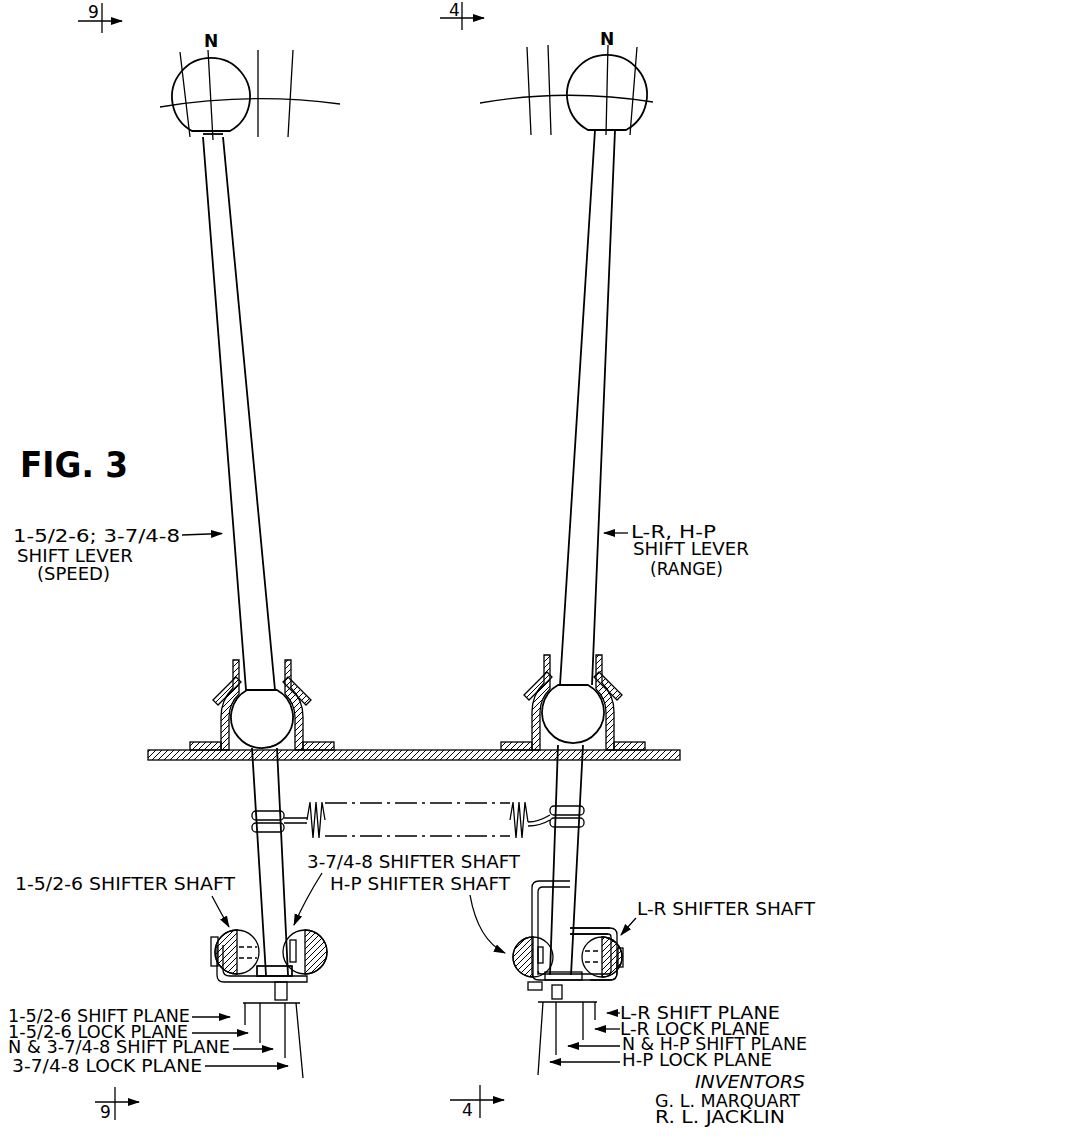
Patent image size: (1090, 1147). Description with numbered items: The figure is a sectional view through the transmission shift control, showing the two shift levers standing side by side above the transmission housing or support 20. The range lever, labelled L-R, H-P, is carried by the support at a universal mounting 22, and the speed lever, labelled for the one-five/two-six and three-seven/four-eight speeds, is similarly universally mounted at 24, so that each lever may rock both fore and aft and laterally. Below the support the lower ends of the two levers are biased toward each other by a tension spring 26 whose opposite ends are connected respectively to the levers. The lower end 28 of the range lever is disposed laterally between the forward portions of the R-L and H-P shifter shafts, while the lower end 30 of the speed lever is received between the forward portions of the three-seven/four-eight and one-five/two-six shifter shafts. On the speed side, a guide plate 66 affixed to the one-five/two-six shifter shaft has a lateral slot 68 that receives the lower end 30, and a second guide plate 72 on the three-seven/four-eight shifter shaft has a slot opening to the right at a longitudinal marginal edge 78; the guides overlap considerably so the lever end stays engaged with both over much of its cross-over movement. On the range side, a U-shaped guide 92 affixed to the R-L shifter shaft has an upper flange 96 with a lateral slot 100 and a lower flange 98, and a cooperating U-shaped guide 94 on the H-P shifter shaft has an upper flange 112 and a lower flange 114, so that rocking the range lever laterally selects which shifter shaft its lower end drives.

The transmission housing or support 20 is at (442, 750).
The universal mounting of range lever 22 is at (595, 707).
The universal mounting of speed lever 24 is at (237, 712).
The tension spring 26 is at (447, 803).
The lower end of range lever 28 is at (565, 850).
The lower end of speed lever 30 is at (265, 848).
The guide plate 66 is at (222, 940).
The lateral slot 68 is at (246, 983).
The guide plate 72 is at (296, 932).
The longitudinal marginal edge 78 is at (262, 938).
The guide 92 is at (620, 946).
The guide 94 is at (531, 918).
The upper flange 96 is at (582, 928).
The lower flange 98 is at (612, 982).
The lateral slot 100 is at (606, 936).
The upper flange 112 is at (570, 886).
The lower flange 114 is at (530, 985).